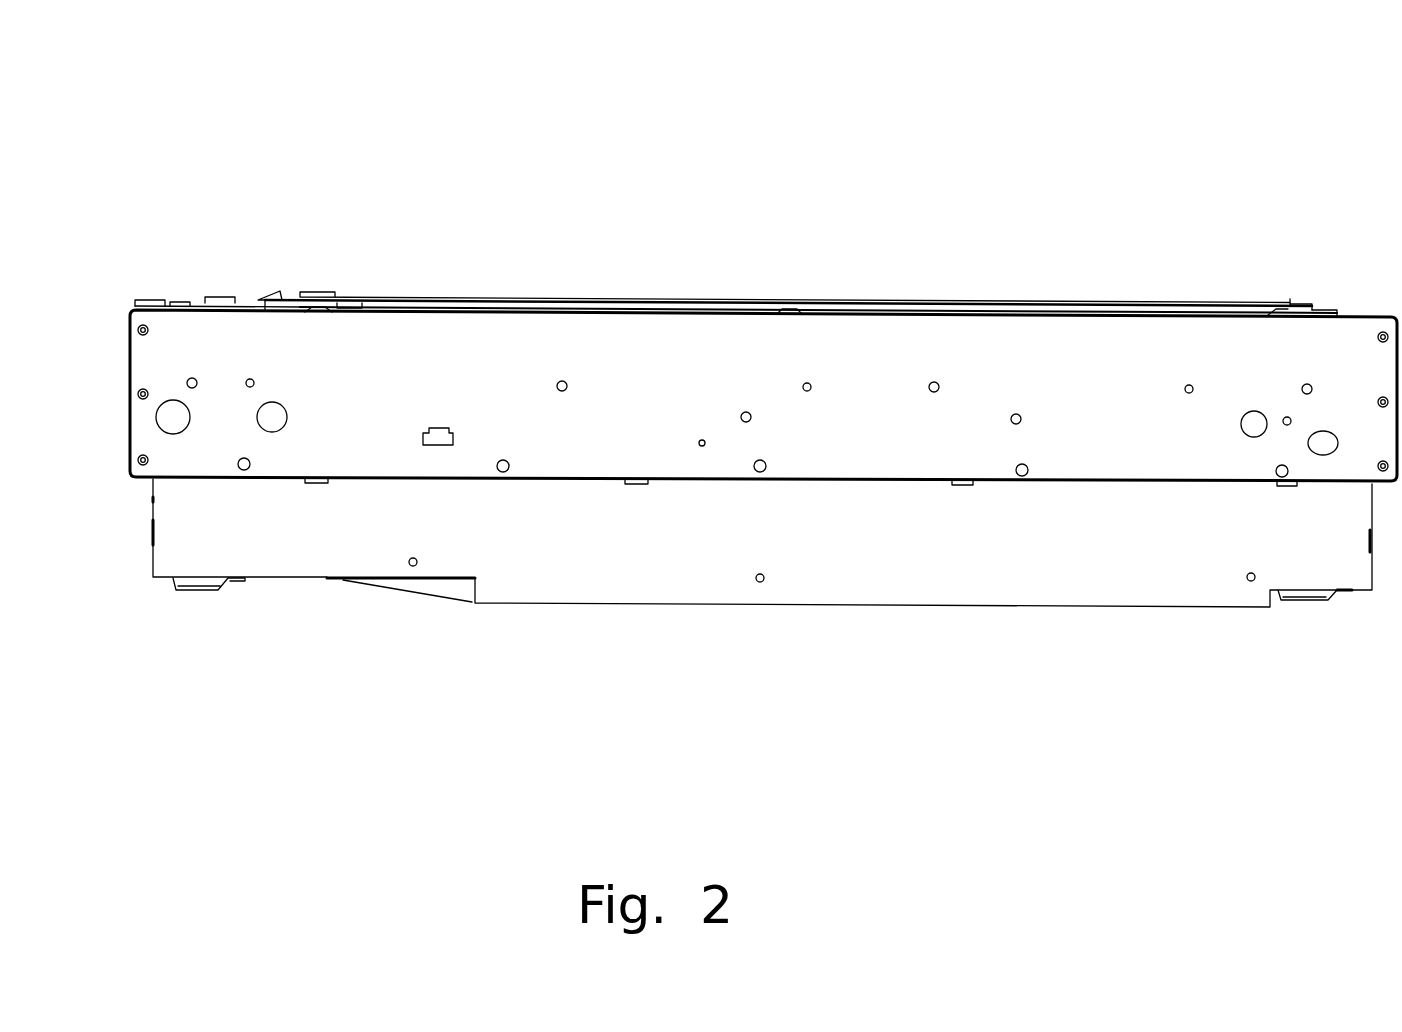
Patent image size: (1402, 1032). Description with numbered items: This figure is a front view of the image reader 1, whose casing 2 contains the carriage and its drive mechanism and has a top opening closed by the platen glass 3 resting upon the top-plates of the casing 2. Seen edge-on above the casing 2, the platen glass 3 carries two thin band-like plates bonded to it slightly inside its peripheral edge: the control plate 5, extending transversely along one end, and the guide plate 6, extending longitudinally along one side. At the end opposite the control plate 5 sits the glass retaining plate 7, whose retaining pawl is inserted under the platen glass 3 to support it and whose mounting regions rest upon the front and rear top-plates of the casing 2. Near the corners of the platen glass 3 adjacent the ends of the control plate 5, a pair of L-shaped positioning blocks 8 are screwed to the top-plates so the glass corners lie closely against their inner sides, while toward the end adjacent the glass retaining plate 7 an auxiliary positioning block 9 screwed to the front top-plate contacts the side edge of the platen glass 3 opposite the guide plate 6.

The image reader 1 is at (1012, 258).
The casing 2 is at (843, 335).
The platen glass 3 is at (605, 302).
The control plate 5 is at (1253, 298).
The guide plate 6 is at (702, 297).
The glass retaining plate 7 is at (260, 298).
The positioning blocks 8 is at (1317, 313).
The auxiliary positioning block 9 is at (357, 297).